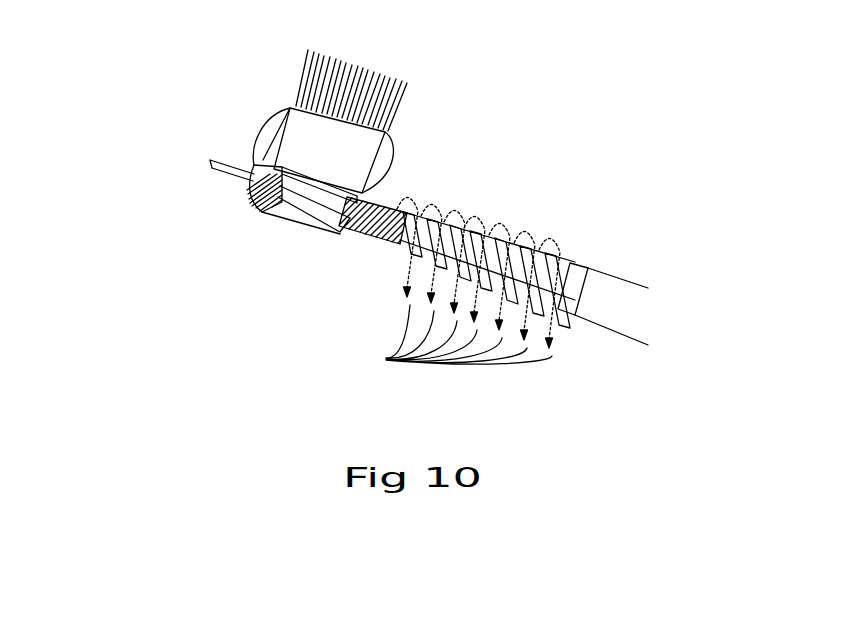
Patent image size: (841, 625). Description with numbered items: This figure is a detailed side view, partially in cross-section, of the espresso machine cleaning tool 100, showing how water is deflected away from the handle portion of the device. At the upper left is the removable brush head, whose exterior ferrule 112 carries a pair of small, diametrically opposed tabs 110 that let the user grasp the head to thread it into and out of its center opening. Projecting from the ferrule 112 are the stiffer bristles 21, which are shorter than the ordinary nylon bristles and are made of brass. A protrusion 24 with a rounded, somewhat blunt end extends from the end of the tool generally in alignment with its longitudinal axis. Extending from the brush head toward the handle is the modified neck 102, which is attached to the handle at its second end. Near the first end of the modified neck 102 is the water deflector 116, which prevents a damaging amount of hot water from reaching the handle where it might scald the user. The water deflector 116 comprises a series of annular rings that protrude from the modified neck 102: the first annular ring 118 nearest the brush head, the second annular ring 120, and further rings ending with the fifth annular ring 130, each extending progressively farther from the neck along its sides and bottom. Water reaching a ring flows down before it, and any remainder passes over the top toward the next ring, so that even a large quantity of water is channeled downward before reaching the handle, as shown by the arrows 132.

The stiffer bristles 21 is at (383, 100).
The protrusion 24 is at (218, 172).
The espresso machine cleaning tool 100 is at (516, 218).
The modified neck 102 is at (596, 344).
The tabs 110 is at (260, 140).
The exterior ferrule 112 is at (305, 130).
The water deflector 116 is at (570, 230).
The first annular ring 118 is at (440, 208).
The second annular ring 120 is at (460, 217).
The fifth annular ring 130 is at (572, 262).
The arrows 132 is at (393, 358).